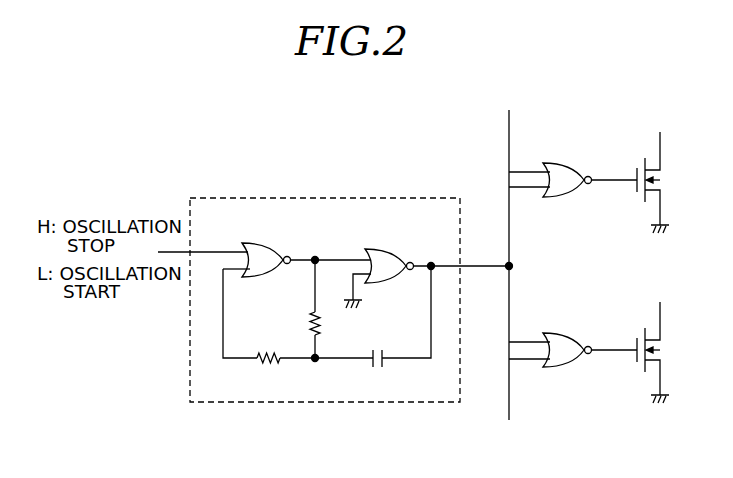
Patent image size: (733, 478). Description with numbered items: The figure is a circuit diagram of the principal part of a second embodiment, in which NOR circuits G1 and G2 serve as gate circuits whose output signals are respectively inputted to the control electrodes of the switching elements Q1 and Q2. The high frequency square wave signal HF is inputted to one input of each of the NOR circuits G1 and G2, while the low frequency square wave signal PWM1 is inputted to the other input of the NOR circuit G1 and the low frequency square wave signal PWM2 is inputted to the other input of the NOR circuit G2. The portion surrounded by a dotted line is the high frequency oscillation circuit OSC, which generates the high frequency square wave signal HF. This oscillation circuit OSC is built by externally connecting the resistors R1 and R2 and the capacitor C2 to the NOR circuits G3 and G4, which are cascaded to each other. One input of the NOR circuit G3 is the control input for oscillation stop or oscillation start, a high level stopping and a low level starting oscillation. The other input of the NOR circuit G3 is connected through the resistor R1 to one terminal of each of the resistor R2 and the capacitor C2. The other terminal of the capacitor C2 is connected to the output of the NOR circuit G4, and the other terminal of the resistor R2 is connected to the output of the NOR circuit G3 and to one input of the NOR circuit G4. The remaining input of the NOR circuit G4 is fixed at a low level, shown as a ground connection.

The NOR circuit G1 is at (573, 166).
The NOR circuit G2 is at (573, 338).
The NOR circuit G3 is at (257, 248).
The NOR circuit G4 is at (379, 267).
The switching element Q1 is at (663, 182).
The switching element Q2 is at (665, 352).
The resistor R1 is at (269, 372).
The resistor R2 is at (303, 309).
The capacitor C2 is at (382, 370).
The high frequency oscillation circuit OSC is at (325, 287).
The high frequency square wave signal HF is at (527, 265).
The low frequency square wave signal PWM1 is at (506, 175).
The low frequency square wave signal PWM2 is at (508, 356).